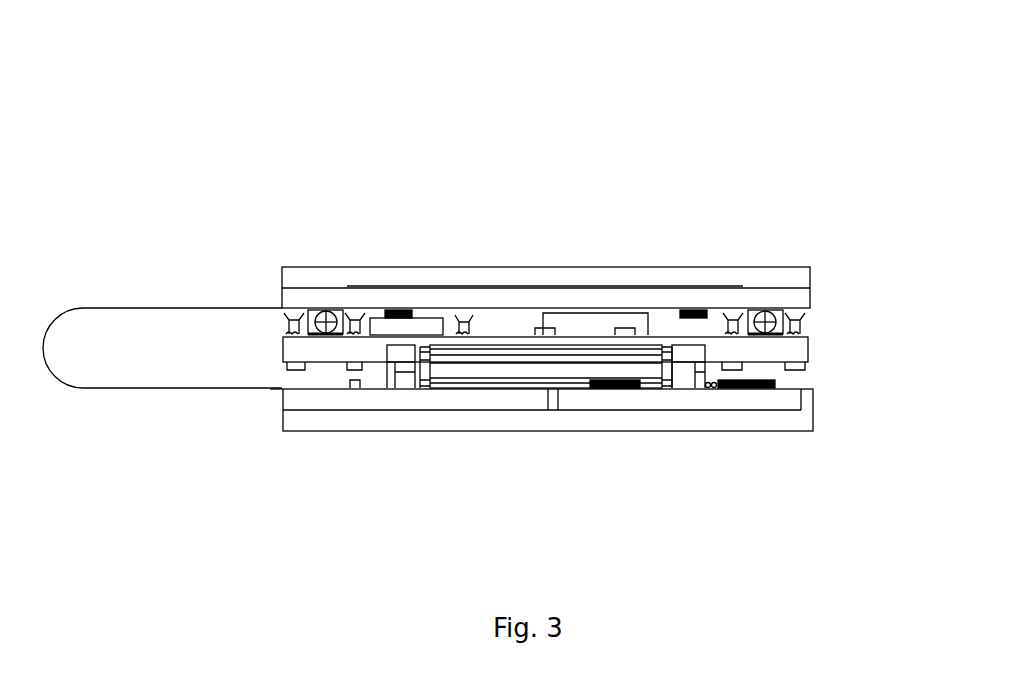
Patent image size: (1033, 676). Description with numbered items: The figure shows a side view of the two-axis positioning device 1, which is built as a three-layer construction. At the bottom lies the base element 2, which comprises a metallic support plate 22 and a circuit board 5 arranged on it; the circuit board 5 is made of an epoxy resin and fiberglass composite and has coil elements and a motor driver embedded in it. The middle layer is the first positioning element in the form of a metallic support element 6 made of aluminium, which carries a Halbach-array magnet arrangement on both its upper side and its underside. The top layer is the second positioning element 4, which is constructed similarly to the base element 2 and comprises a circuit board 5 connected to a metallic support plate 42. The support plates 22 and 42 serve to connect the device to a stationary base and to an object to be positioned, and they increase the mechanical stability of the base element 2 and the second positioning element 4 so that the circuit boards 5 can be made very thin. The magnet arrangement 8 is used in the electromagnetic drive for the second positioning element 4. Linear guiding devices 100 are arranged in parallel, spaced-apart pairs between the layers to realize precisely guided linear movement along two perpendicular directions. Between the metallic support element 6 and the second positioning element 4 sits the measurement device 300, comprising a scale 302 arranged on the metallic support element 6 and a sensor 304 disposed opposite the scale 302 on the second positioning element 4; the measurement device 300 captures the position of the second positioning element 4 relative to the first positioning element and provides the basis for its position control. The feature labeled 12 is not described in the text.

The two-axis positioning device 1 is at (406, 147).
The base element 2 is at (533, 452).
The second positioning element 4 is at (500, 232).
The circuit board 5 is at (780, 305).
The metallic support element 6 is at (800, 347).
The magnet arrangement 8 is at (600, 318).
The flexible cable loop 12 is at (127, 308).
The metallic support plate 22 is at (768, 425).
The metallic support plate 42 is at (712, 275).
The linear guiding device 100 is at (835, 314).
The measurement device 300 is at (376, 351).
The scale 302 is at (387, 332).
The sensor 304 is at (403, 318).